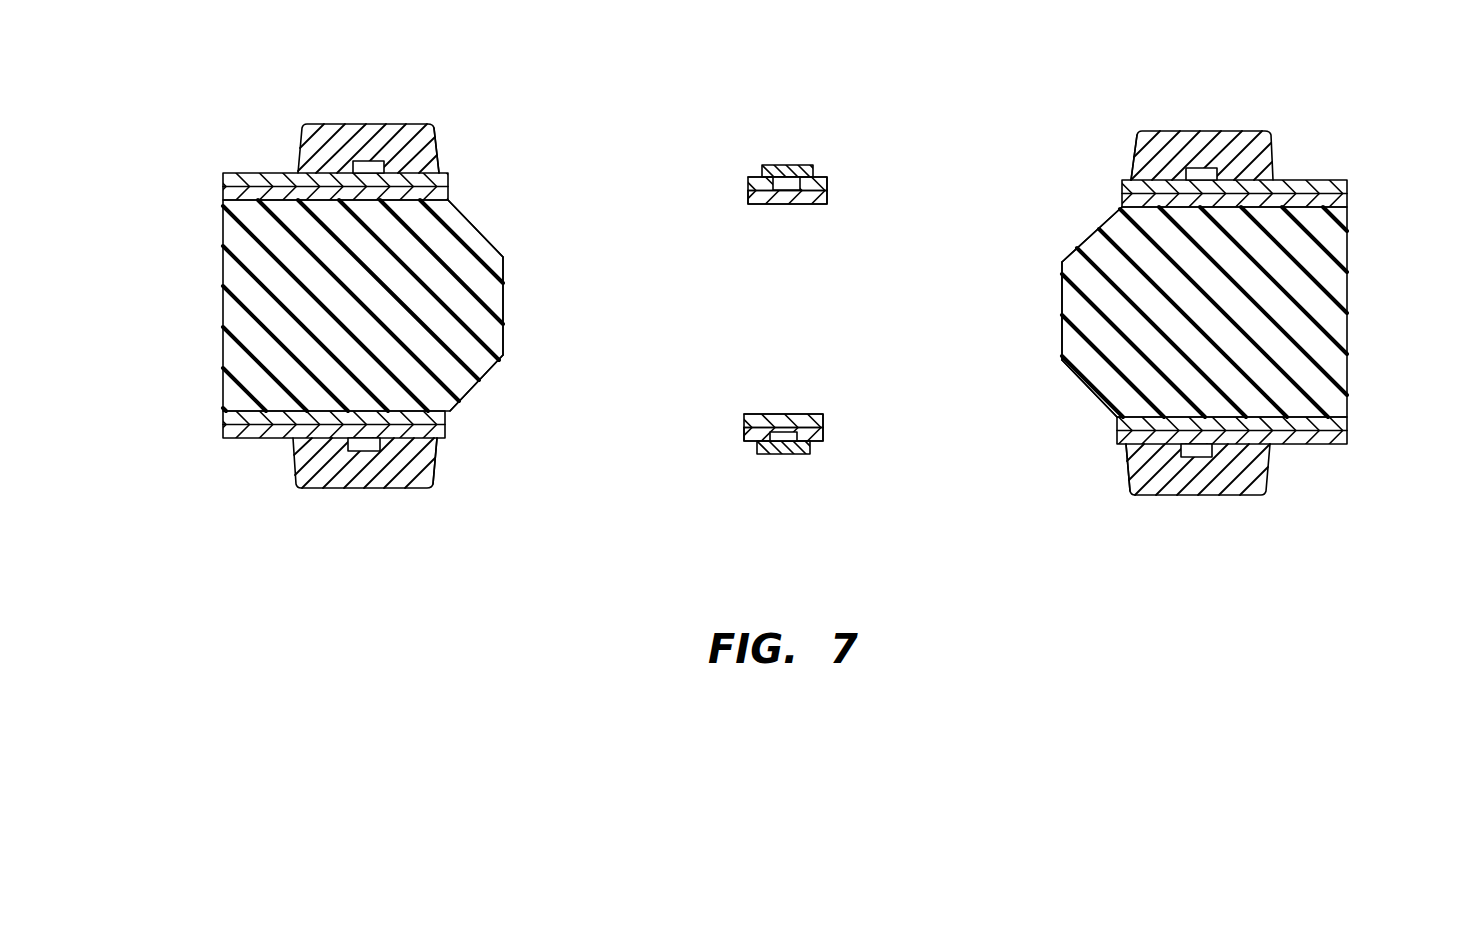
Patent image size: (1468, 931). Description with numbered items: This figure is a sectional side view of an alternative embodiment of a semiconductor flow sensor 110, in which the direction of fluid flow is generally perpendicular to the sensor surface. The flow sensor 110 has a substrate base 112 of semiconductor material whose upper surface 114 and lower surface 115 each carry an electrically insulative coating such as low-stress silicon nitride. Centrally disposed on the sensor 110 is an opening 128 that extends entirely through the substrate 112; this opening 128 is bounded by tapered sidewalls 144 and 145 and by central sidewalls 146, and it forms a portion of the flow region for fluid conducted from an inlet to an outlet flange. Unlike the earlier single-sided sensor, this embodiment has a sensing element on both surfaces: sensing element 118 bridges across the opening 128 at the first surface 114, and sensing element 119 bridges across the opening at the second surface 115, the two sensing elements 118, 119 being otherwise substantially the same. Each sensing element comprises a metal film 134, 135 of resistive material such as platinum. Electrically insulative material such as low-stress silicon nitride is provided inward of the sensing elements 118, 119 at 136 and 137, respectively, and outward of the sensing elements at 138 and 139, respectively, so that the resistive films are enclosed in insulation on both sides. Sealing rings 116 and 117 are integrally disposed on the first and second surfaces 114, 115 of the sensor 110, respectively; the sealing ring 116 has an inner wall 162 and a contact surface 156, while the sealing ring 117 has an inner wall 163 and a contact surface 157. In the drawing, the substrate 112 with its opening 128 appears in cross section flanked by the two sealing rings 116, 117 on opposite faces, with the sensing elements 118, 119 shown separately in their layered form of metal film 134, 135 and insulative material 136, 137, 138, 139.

The semiconductor flow sensor 110 is at (200, 238).
The substrate base 112 is at (1312, 302).
The upper surface 114 is at (258, 173).
The lower surface 115 is at (245, 440).
The sealing ring 116 is at (1256, 148).
The sealing ring 117 is at (1250, 468).
The sensing element 118 is at (785, 169).
The sensing element 119 is at (794, 439).
The opening 128 is at (813, 337).
The metal film 134 is at (800, 190).
The metal film 135 is at (795, 430).
The electrically insulative material 136 is at (785, 200).
The electrically insulative material 137 is at (785, 420).
The electrically insulative material 138 is at (785, 177).
The electrically insulative material 139 is at (775, 443).
The tapered sidewall 144 is at (478, 228).
The tapered sidewall 145 is at (465, 390).
The central sidewalls 146 is at (503, 318).
The contact surface 156 is at (323, 124).
The contact surface 157 is at (322, 488).
The inner wall 162 is at (443, 148).
The inner wall 163 is at (433, 470).